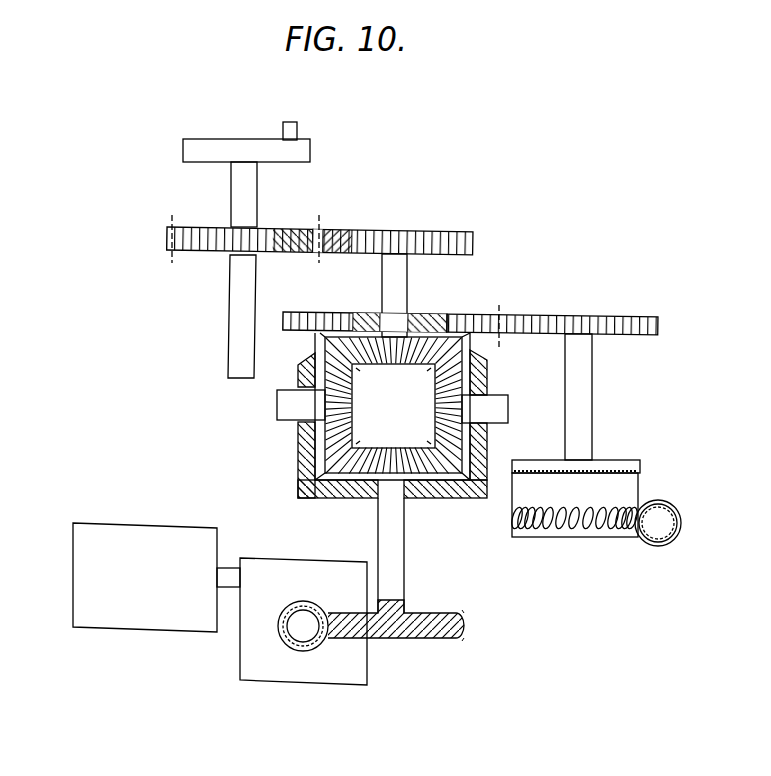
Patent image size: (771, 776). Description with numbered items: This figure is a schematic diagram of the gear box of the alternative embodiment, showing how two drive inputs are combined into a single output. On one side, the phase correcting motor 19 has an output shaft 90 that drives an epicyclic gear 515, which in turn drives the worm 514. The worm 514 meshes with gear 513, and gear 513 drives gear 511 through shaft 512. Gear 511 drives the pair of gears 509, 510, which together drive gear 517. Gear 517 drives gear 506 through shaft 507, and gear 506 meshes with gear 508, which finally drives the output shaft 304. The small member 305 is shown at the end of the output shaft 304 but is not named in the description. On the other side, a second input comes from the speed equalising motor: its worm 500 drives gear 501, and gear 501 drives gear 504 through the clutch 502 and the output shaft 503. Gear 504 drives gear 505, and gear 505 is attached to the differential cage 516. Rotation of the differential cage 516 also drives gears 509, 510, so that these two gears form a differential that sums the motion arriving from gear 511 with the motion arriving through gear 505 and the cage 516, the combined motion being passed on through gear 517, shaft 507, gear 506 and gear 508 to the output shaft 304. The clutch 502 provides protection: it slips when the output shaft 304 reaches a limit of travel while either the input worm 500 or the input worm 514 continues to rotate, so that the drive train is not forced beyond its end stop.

The phase correcting motor 19 is at (125, 535).
The output shaft 90 is at (230, 568).
The output shaft 304 is at (247, 187).
The stop member 305 is at (295, 122).
The worm 500 is at (660, 530).
The gear 501 is at (567, 528).
The clutch 502 is at (602, 462).
The output shaft 503 is at (577, 362).
The gear 504 is at (537, 319).
The gear 505 is at (358, 322).
The gear 506 is at (395, 237).
The shaft 507 is at (395, 275).
The gear 508 is at (223, 233).
The gear 509 is at (293, 403).
The gear 510 is at (493, 410).
The gear 511 is at (427, 450).
The shaft 512 is at (388, 557).
The gear 513 is at (393, 638).
The worm 514 is at (303, 622).
The epicyclic gear 515 is at (292, 570).
The differential cage 516 is at (485, 368).
The gear 517 is at (362, 366).